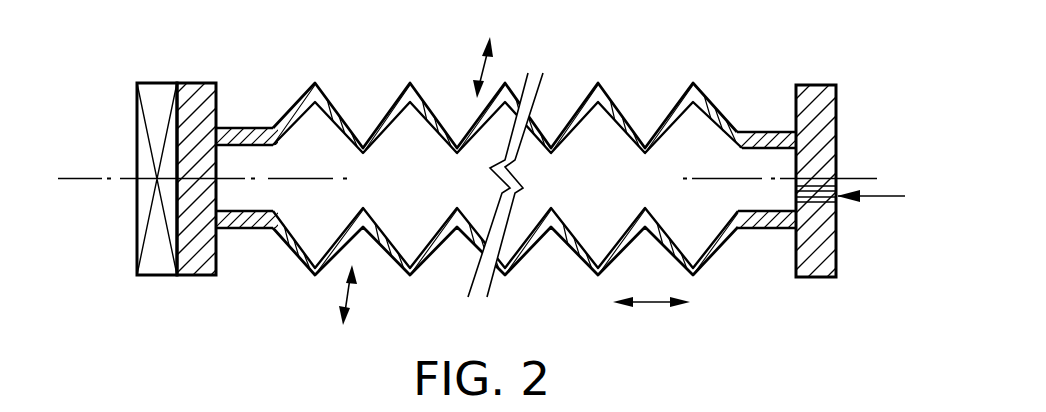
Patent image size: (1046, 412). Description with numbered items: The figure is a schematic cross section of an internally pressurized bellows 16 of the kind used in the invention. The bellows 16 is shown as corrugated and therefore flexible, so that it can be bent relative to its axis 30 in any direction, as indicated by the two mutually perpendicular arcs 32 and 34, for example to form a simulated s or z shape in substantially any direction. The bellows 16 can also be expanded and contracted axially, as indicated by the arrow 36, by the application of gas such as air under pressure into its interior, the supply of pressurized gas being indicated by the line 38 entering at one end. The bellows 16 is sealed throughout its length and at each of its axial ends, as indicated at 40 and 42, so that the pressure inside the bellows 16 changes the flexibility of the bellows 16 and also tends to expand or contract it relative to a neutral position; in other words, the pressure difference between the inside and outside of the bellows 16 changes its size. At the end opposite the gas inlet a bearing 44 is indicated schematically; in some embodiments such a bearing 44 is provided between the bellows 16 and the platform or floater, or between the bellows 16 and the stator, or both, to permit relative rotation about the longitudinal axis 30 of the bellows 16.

The bellows 16 is at (325, 85).
The axis 30 is at (82, 178).
The arc 32 is at (477, 62).
The arc 34 is at (350, 300).
The arrow 36 is at (655, 302).
The line 38 is at (884, 197).
The axial end seal 40 is at (810, 97).
The axial end seal 42 is at (193, 90).
The bearing 44 is at (155, 115).